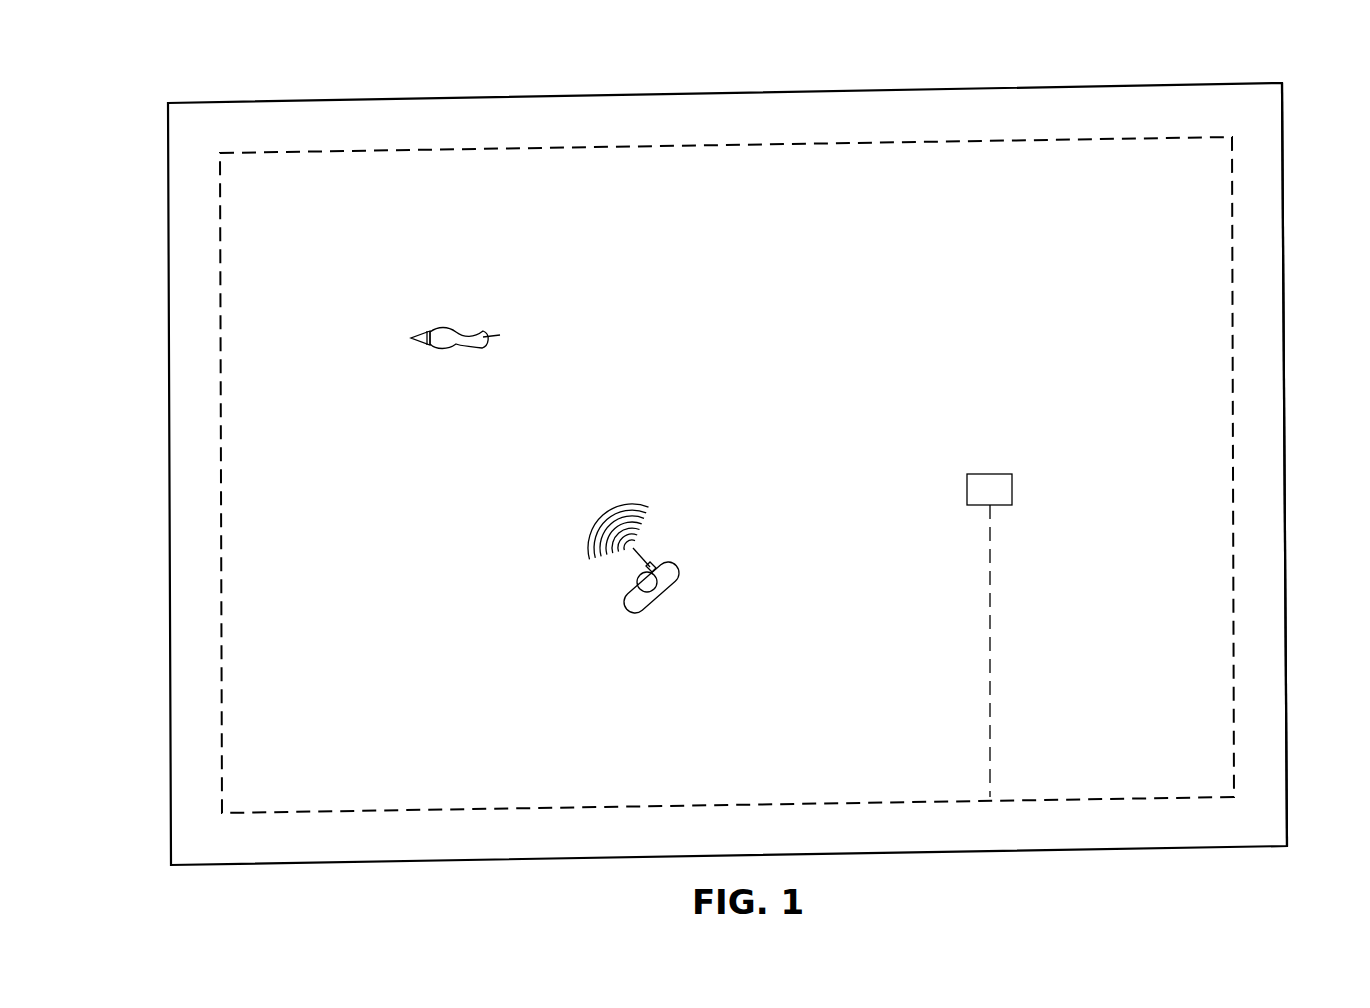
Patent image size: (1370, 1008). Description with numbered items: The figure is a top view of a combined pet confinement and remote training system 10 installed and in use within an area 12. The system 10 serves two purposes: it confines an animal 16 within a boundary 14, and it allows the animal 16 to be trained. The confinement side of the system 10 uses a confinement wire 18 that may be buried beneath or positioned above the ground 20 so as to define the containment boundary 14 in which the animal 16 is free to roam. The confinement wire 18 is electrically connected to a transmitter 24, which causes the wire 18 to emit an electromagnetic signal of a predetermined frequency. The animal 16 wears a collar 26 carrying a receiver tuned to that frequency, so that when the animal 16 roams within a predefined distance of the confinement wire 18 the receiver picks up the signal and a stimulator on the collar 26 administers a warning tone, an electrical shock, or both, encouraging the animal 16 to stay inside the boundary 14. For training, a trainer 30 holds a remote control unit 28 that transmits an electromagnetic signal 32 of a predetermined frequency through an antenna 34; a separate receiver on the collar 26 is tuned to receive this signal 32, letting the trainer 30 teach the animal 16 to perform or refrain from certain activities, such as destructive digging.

The combined pet confinement and remote training system 10 is at (158, 653).
The area 12 is at (971, 116).
The boundary 14 is at (1073, 150).
The animal 16 is at (503, 300).
The confinement wire 18 is at (1232, 162).
The ground 20 is at (1273, 279).
The transmitter 24 is at (1012, 486).
The collar 26 is at (430, 334).
The remote control unit 28 is at (657, 569).
The trainer 30 is at (667, 581).
The electromagnetic signal 32 is at (625, 505).
The antenna 34 is at (645, 553).